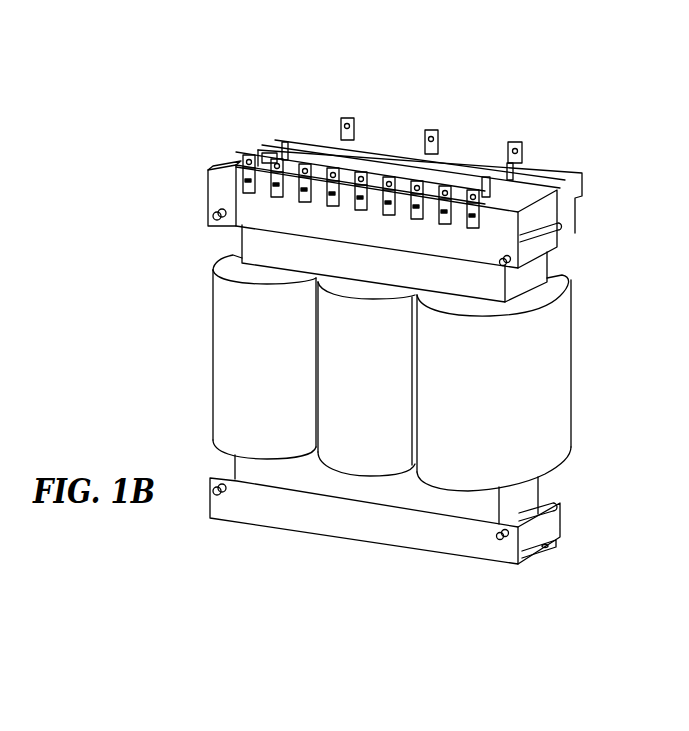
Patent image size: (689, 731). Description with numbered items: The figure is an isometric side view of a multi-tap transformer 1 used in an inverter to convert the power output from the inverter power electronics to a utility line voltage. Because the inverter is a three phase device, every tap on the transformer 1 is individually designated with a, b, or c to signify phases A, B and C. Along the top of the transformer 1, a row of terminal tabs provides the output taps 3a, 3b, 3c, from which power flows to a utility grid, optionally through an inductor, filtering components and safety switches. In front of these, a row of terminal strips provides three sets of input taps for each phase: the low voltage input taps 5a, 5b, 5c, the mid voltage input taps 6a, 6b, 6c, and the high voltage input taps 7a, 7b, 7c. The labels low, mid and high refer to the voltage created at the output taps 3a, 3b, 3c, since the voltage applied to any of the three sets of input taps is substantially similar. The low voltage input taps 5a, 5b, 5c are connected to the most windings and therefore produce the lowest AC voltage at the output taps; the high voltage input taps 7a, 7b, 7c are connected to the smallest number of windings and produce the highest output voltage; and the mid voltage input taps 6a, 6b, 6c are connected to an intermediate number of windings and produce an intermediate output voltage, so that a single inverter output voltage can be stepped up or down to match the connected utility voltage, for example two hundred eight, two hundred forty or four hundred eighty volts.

The multi-tap transformer 1 is at (395, 352).
The output tap (phase A) 3a is at (517, 142).
The output tap (phase B) 3b is at (433, 130).
The output tap (phase C) 3c is at (348, 118).
The low voltage input tap (phase A) 5a is at (475, 189).
The low voltage input tap (phase B) 5b is at (393, 176).
The low voltage input tap (phase C) 5c is at (307, 163).
The mid voltage input tap (phase A) 6a is at (446, 185).
The mid voltage input tap (phase B) 6b is at (363, 172).
The mid voltage input tap (phase C) 6c is at (285, 142).
The high voltage input tap (phase A) 7a is at (418, 180).
The high voltage input tap (phase B) 7b is at (339, 167).
The high voltage input tap (phase C) 7c is at (252, 154).